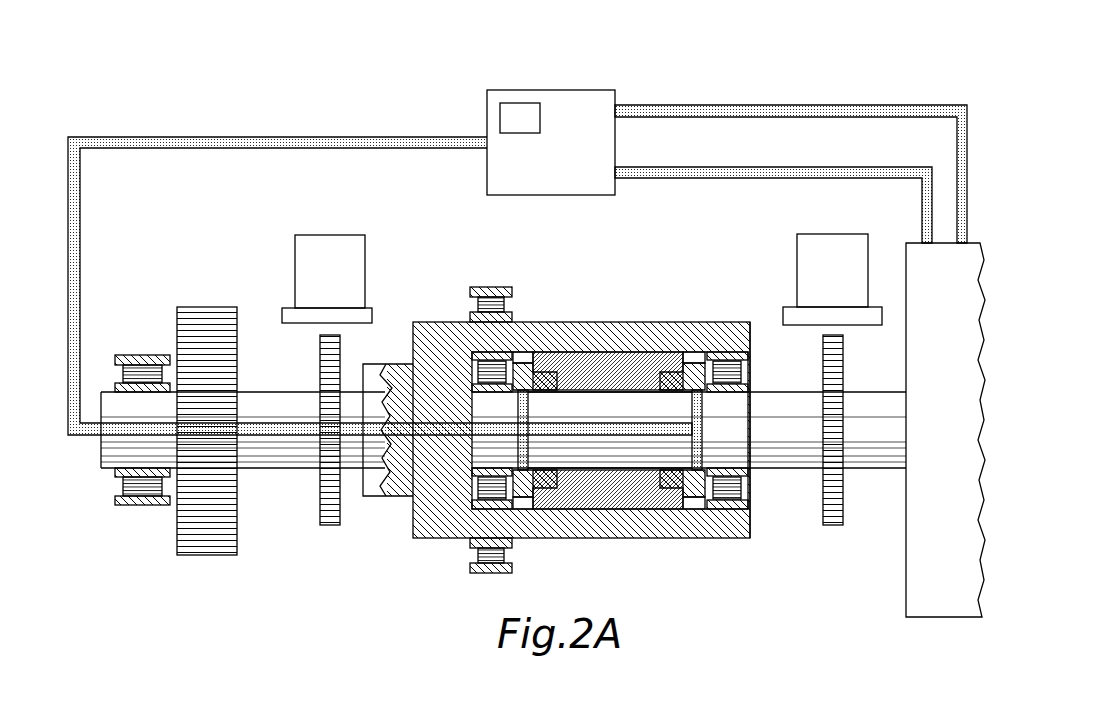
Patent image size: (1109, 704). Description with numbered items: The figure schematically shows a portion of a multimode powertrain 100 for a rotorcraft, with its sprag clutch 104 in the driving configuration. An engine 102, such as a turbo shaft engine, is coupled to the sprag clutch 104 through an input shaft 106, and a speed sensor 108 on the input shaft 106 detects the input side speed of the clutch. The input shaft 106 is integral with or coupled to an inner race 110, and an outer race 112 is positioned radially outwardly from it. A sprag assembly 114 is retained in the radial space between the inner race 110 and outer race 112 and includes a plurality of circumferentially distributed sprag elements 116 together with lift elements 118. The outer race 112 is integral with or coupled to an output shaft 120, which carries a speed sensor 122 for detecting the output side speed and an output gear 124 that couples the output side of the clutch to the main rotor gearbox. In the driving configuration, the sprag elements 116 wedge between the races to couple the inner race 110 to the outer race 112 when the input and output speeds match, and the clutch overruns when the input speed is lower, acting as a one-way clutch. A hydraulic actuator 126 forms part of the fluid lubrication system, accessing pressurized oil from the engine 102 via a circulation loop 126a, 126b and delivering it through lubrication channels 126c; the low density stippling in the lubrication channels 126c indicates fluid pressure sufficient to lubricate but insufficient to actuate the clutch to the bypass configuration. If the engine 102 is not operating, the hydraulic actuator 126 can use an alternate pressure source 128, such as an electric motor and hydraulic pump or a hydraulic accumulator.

The multimode powertrain 100 is at (776, 80).
The engine 102 is at (907, 583).
The sprag clutch 104 is at (673, 540).
The input shaft 106 is at (795, 470).
The speed sensor 108 is at (800, 270).
The inner race 110 is at (640, 400).
The outer race 112 is at (618, 330).
The sprag assembly 114 is at (600, 541).
The sprag elements 116 is at (578, 352).
The lift elements 118 is at (524, 357).
The output shaft 120 is at (290, 470).
The speed sensor 122 is at (360, 258).
The output gear 124 is at (207, 307).
The hydraulic actuator 126 is at (585, 100).
The circulation loop 126a is at (667, 110).
The circulation loop 126b is at (683, 178).
The lubrication channels 126c is at (78, 240).
The alternate pressure source 128 is at (518, 101).